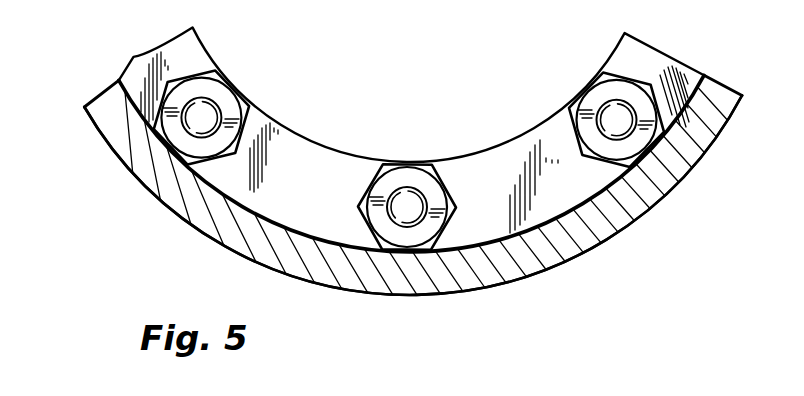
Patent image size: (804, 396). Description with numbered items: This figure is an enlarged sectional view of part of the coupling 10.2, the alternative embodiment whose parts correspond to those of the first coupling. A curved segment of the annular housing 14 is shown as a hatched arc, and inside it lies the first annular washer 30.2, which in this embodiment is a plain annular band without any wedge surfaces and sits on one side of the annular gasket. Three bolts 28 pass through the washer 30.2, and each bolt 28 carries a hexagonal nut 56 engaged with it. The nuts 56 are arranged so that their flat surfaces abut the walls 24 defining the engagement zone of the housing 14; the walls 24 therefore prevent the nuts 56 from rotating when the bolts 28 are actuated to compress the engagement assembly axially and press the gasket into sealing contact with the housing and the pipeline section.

The coupling 10.2 is at (413, 188).
The annular housing 14 is at (552, 276).
The walls 24 is at (645, 218).
The bolt 28 is at (194, 122).
The first annular washer 30.2 is at (580, 76).
The nut 56 is at (178, 134).